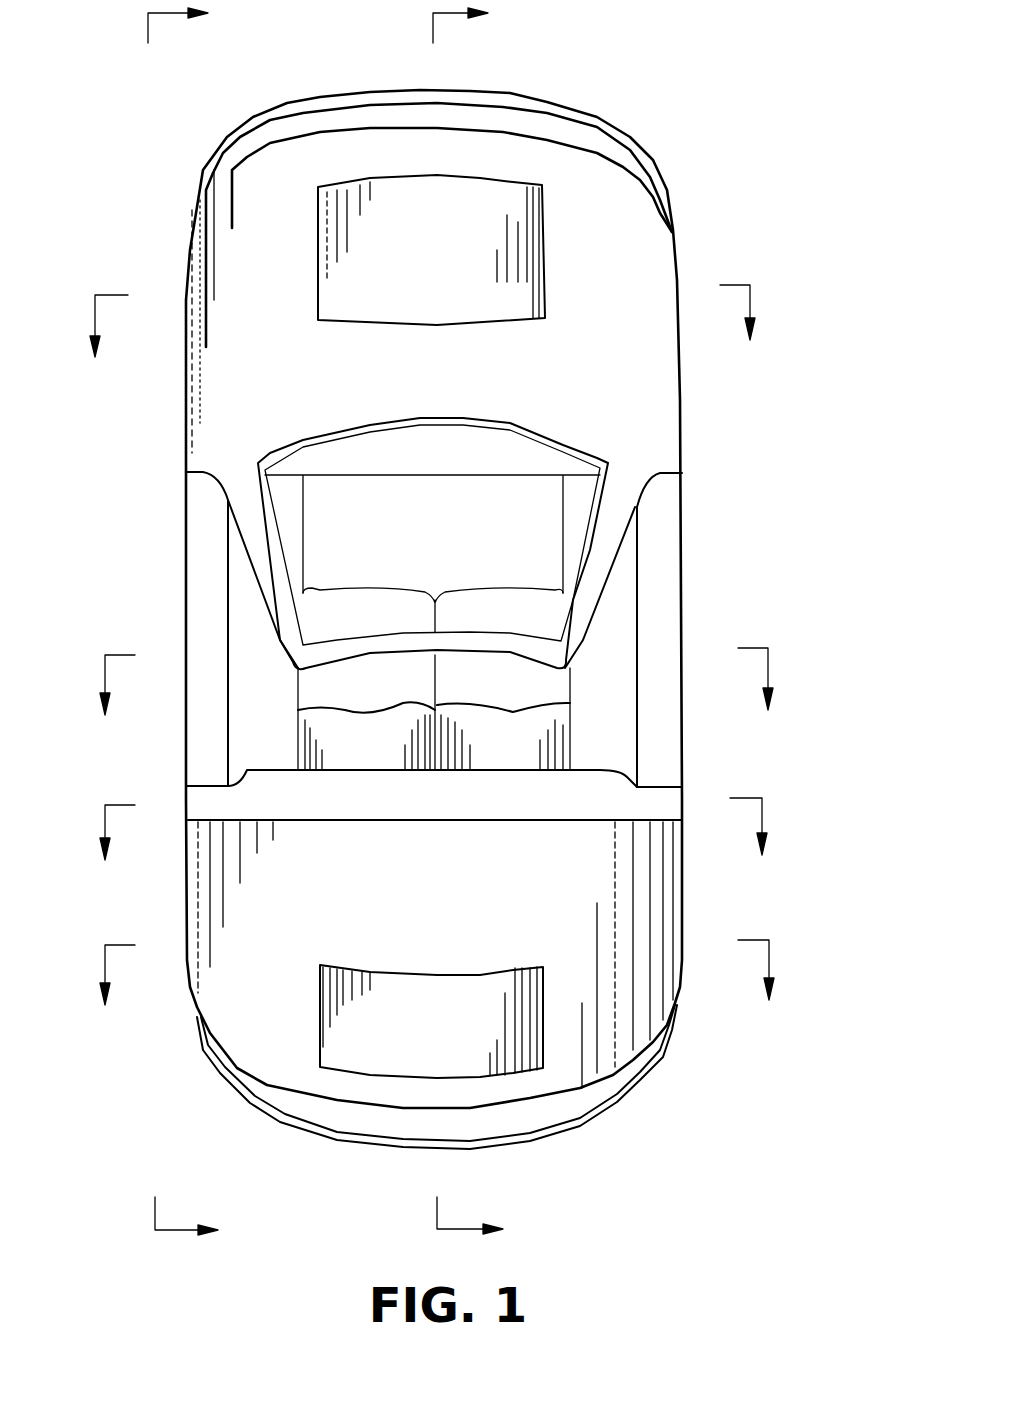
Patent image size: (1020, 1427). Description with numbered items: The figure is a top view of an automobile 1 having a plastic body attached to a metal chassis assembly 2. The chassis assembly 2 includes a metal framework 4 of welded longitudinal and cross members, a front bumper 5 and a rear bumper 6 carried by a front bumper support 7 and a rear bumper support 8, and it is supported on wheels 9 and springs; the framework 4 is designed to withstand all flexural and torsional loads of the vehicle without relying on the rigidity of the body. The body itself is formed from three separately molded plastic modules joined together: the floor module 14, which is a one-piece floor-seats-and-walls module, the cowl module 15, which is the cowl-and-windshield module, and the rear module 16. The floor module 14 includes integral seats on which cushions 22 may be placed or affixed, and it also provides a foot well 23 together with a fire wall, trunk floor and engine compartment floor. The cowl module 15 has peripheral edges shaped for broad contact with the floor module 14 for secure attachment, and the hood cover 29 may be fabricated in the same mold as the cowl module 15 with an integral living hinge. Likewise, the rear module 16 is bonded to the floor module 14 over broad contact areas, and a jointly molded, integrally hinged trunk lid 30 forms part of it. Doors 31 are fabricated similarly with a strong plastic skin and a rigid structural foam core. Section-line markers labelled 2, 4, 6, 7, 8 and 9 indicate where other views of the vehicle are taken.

The automobile 1 is at (135, 452).
The chassis assembly 2 is at (202, 624).
The metal framework 4 is at (483, 623).
The front bumper 5 is at (577, 112).
The rear bumper 6 is at (600, 1120).
The front bumper support 7 is at (439, 705).
The rear bumper support 8 is at (436, 852).
The wheels 9 is at (439, 995).
The floor module 14 is at (411, 814).
The cowl module 15 is at (447, 381).
The rear module 16 is at (411, 914).
The cushions 22 is at (351, 699).
The foot well 23 is at (414, 553).
The hood cover 29 is at (411, 259).
The trunk lid 30 is at (411, 1038).
The doors 31 is at (205, 581).